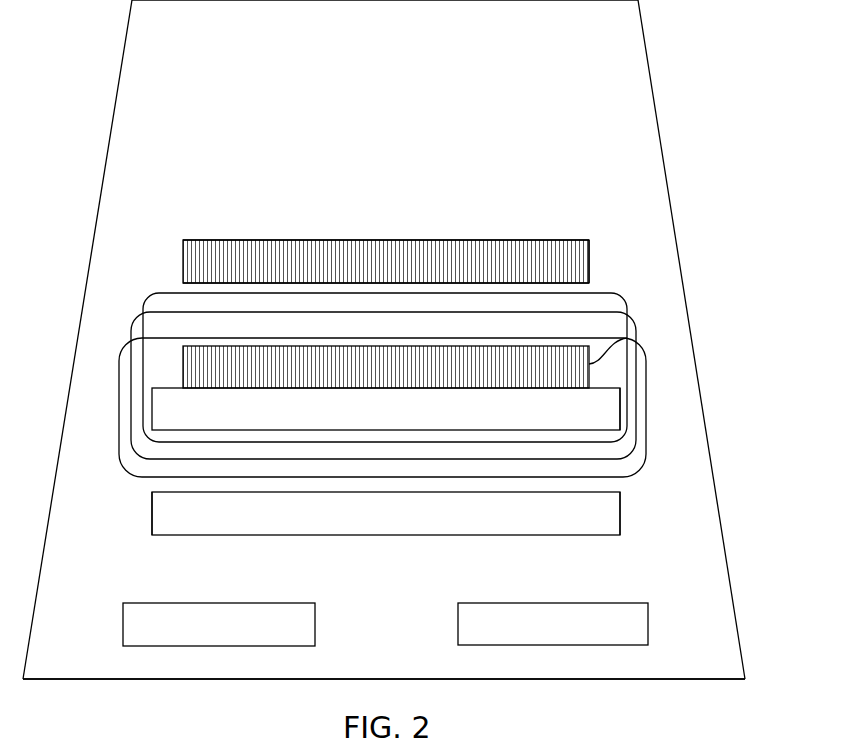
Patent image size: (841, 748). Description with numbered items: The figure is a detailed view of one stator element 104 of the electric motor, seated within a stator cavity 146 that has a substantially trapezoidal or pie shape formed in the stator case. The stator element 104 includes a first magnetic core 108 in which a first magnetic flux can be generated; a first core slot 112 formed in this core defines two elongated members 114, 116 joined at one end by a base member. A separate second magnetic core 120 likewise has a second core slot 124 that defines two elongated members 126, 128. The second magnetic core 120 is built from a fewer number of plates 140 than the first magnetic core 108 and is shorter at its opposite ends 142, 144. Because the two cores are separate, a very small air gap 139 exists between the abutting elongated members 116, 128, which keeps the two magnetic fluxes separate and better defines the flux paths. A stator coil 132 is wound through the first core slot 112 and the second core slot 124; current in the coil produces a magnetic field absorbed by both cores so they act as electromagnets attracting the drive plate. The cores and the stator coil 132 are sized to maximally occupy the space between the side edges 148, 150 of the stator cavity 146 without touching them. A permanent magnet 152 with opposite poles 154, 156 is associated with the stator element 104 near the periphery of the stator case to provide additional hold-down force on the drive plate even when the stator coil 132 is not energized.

The stator element 104 is at (648, 67).
The first magnetic core 108 is at (386, 505).
The first core slot 112 is at (160, 491).
The elongated member 114 is at (621, 519).
The elongated member 116 is at (620, 407).
The second magnetic core 120 is at (386, 339).
The second core slot 124 is at (190, 283).
The elongated member 126 is at (595, 242).
The elongated member 128 is at (616, 342).
The stator coil 132 is at (638, 468).
The air gap 139 is at (593, 384).
The plates 140 is at (527, 240).
The end 142 is at (368, 360).
The end 144 is at (632, 247).
The stator cavity 146 is at (405, 34).
The side edge 148 is at (104, 175).
The side edge 150 is at (655, 105).
The permanent magnet 152 is at (692, 612).
The pole 154 is at (123, 632).
The pole 156 is at (458, 632).